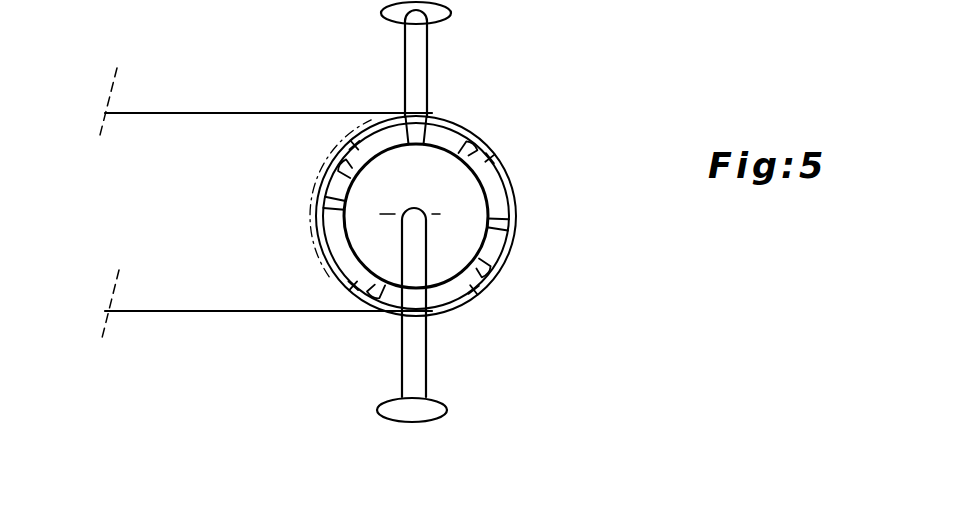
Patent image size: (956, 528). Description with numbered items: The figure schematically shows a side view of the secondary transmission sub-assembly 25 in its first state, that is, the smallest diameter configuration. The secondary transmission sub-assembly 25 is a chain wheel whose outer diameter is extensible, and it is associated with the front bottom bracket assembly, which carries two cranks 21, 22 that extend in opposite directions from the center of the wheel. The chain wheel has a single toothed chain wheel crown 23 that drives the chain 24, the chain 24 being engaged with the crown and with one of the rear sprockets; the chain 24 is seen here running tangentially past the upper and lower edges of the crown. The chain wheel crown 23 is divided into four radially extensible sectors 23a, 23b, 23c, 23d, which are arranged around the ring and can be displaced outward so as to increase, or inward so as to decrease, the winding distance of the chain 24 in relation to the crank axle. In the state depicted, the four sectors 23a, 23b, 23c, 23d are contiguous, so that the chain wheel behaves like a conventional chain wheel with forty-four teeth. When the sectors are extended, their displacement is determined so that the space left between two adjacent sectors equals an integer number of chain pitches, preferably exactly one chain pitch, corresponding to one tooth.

The crank 21 is at (426, 363).
The crank 22 is at (428, 67).
The chain wheel crown 23 is at (292, 220).
The radially extensible sector 23a is at (340, 162).
The radially extensible sector 23b is at (472, 150).
The radially extensible sector 23c is at (493, 272).
The radially extensible sector 23d is at (372, 300).
The chain 24 is at (160, 112).
The secondary transmission sub-assembly 25 is at (386, 228).